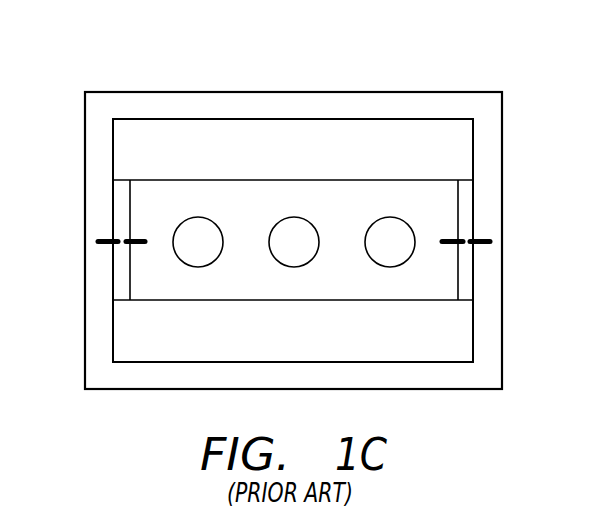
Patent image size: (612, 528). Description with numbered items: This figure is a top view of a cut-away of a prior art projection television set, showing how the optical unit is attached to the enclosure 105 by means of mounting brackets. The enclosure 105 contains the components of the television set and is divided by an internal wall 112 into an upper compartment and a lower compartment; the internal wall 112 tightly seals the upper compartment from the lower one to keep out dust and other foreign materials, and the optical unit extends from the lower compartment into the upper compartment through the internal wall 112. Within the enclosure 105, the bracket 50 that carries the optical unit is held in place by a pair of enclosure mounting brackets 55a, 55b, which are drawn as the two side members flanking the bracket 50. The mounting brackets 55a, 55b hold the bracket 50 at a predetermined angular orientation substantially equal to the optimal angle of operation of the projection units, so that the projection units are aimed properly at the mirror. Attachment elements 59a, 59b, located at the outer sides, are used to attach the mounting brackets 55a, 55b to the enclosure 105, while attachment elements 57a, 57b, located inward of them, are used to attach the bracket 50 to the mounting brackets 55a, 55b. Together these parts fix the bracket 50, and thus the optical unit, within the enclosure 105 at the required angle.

The enclosure 105 is at (170, 76).
The internal wall 112 is at (318, 136).
The bracket 50 is at (328, 290).
The enclosure mounting bracket 55a is at (102, 206).
The enclosure mounting bracket 55b is at (467, 281).
The attachment element 57a is at (140, 237).
The attachment element 57b is at (451, 237).
The attachment element 59a is at (103, 247).
The attachment element 59b is at (478, 237).